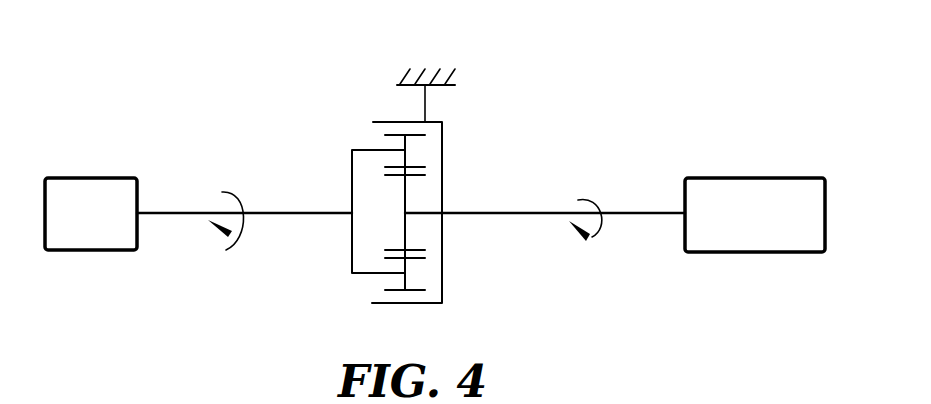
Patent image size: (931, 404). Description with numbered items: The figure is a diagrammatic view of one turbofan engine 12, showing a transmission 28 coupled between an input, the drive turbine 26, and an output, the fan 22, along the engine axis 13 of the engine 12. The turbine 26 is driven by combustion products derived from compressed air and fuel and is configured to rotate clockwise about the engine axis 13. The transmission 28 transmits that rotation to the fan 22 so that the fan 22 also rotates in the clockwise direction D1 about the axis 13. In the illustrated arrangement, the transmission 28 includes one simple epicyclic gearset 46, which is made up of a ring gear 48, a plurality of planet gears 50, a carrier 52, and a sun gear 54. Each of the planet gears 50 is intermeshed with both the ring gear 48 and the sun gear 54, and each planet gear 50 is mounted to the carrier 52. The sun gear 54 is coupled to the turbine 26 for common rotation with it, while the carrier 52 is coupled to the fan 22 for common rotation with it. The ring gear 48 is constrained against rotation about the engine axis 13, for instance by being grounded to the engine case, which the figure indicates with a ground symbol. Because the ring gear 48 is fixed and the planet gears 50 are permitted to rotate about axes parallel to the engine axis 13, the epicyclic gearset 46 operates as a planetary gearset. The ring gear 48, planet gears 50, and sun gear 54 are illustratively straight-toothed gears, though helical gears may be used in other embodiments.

The turbofan engine 12 is at (536, 54).
The engine axis 13 is at (538, 211).
The fan 22 is at (90, 176).
The drive turbine 26 is at (753, 176).
The transmission 28 is at (400, 184).
The epicyclic gearset 46 is at (461, 131).
The ring gear 48 is at (458, 290).
The planet gears 50 is at (419, 180).
The carrier 52 is at (349, 177).
The sun gear 54 is at (402, 214).
The clockwise direction D1 is at (226, 250).